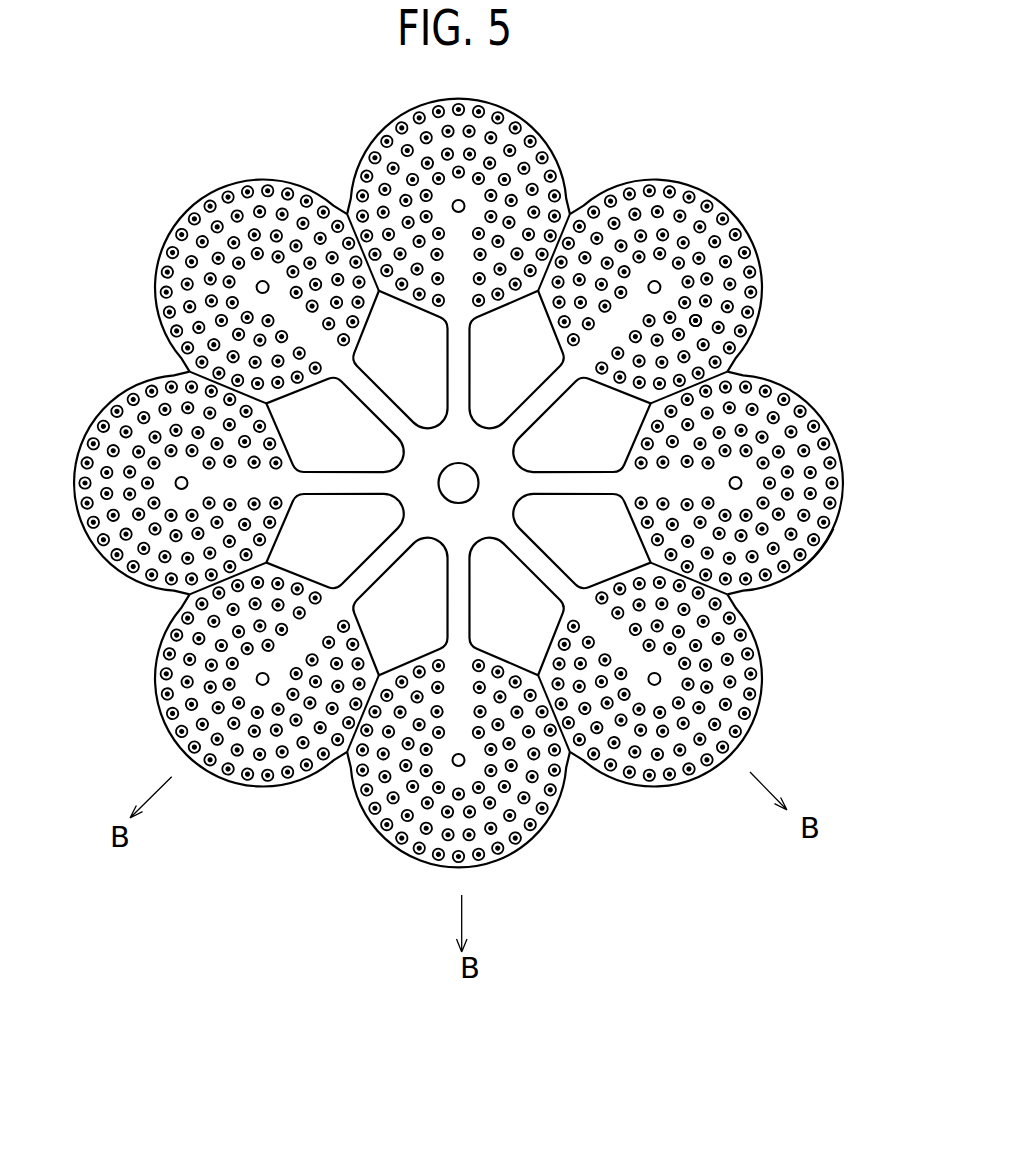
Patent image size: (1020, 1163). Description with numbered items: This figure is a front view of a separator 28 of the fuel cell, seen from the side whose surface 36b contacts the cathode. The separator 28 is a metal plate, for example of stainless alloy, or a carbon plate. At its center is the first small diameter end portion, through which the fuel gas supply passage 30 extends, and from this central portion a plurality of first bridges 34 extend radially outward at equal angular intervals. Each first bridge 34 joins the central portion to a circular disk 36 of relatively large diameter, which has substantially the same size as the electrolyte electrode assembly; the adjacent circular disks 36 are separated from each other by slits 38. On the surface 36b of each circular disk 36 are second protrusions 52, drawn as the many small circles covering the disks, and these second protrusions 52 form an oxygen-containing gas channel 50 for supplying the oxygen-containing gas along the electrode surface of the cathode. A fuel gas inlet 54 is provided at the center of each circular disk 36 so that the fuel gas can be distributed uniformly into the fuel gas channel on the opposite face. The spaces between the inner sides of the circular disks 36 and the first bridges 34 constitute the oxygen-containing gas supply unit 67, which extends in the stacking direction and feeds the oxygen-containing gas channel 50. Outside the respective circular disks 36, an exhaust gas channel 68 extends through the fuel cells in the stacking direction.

The separator 28 is at (489, 476).
The fuel gas supply passage 30 is at (460, 481).
The first bridges 34 is at (470, 369).
The circular disk 36 is at (566, 133).
The surface of the circular disk contacting the cathode 36b is at (843, 474).
The slits 38 is at (225, 392).
The oxygen-containing gas channel 50 is at (703, 314).
The second protrusions 52 is at (732, 300).
The fuel gas inlet 54 is at (657, 279).
The oxygen-containing gas supply unit 67 is at (398, 612).
The exhaust gas channel 68 is at (826, 558).